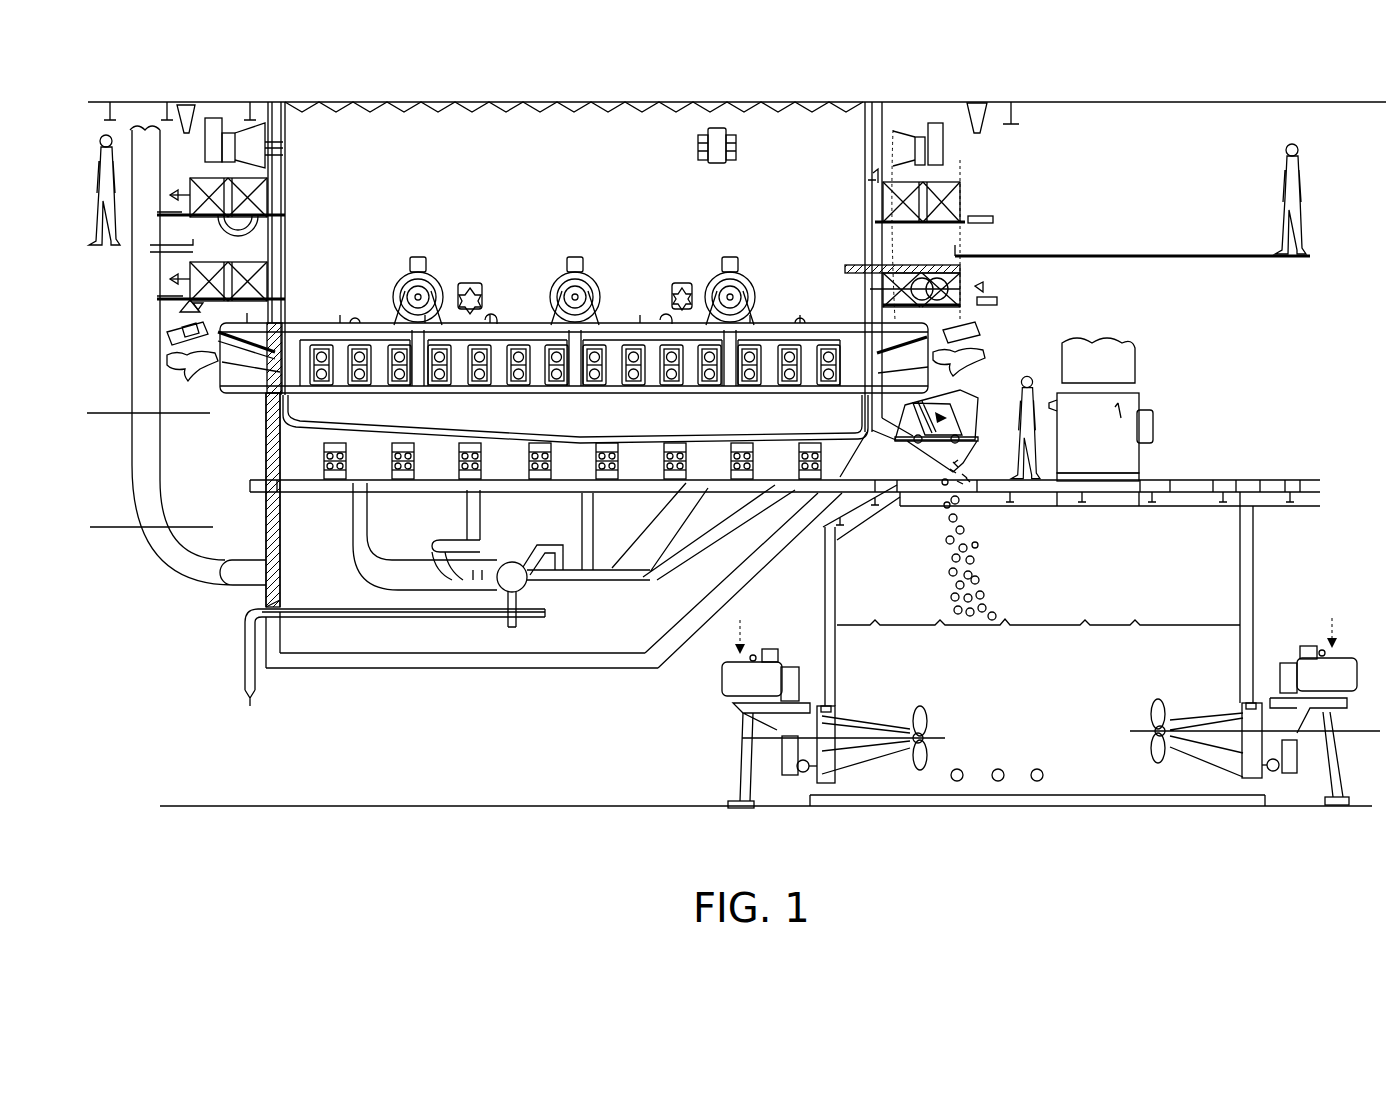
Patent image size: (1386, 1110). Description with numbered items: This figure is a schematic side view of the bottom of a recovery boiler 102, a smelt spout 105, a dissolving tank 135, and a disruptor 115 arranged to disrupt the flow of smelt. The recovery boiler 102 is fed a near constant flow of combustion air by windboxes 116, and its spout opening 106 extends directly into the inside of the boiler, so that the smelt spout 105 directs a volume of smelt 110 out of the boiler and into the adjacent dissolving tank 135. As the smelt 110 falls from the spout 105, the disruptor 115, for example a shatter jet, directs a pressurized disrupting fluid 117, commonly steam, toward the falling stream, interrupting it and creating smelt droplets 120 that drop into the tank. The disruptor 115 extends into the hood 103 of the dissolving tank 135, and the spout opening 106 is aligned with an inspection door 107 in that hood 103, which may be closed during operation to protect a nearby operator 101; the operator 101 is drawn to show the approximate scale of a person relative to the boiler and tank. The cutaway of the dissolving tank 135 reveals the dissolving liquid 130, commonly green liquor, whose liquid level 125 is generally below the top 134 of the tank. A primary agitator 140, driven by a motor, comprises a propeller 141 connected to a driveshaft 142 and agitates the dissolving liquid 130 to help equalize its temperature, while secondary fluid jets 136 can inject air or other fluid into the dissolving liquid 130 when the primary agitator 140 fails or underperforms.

The operator 101 is at (1068, 375).
The recovery boiler 102 is at (517, 192).
The hood 103 is at (958, 396).
The smelt spout 105 is at (880, 430).
The spout opening 106 is at (863, 403).
The inspection door 107 is at (880, 410).
The smelt 110 is at (920, 442).
The disruptor 115 is at (985, 452).
The windboxes 116 is at (150, 130).
The disrupting fluid 117 is at (968, 486).
The smelt droplets 120 is at (987, 573).
The liquid level 125 is at (1118, 622).
The dissolving liquid 130 is at (1148, 669).
The top of the dissolving tank 134 is at (1185, 505).
The dissolving tank 135 is at (1225, 571).
The fluid jets 136 is at (965, 783).
The primary agitator 140 is at (924, 700).
The propeller 141 is at (930, 718).
The driveshaft 142 is at (760, 740).